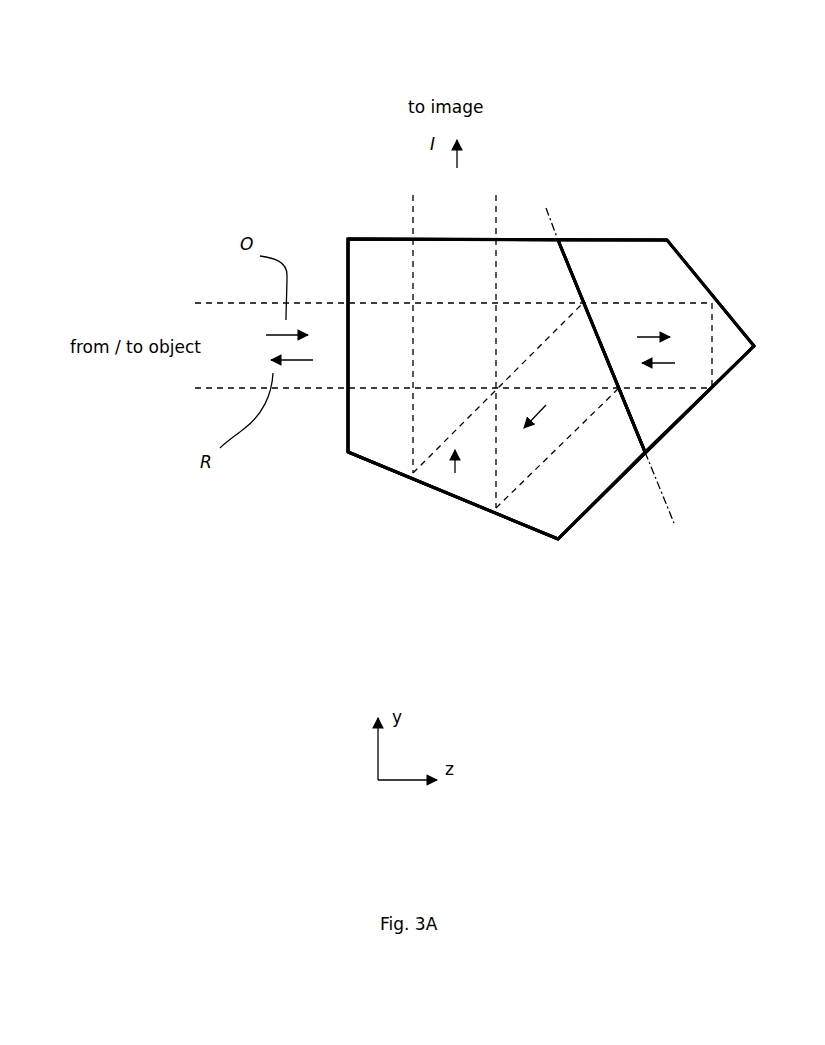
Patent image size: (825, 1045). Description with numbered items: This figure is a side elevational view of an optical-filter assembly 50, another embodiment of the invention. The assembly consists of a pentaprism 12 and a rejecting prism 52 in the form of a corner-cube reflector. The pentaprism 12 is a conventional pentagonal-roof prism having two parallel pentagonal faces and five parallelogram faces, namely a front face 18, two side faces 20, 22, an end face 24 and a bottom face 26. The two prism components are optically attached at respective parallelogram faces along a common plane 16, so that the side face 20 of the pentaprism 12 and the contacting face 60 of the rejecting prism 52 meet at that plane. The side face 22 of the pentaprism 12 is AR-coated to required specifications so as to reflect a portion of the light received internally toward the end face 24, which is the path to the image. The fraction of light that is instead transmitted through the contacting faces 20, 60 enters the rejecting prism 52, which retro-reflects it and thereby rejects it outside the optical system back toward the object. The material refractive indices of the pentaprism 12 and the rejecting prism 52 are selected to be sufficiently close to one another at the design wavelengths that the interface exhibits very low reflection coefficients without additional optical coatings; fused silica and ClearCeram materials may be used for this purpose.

The optical-filter assembly 50 is at (300, 143).
The pentaprism 12 is at (558, 510).
The rejecting prism 52 is at (597, 258).
The side face 20 is at (576, 258).
The common plane 16 is at (666, 503).
The end face 24 is at (388, 239).
The front face 18 is at (348, 421).
The side face 22 is at (375, 462).
The bottom face 26 is at (583, 515).
The contacting face 60 is at (633, 428).